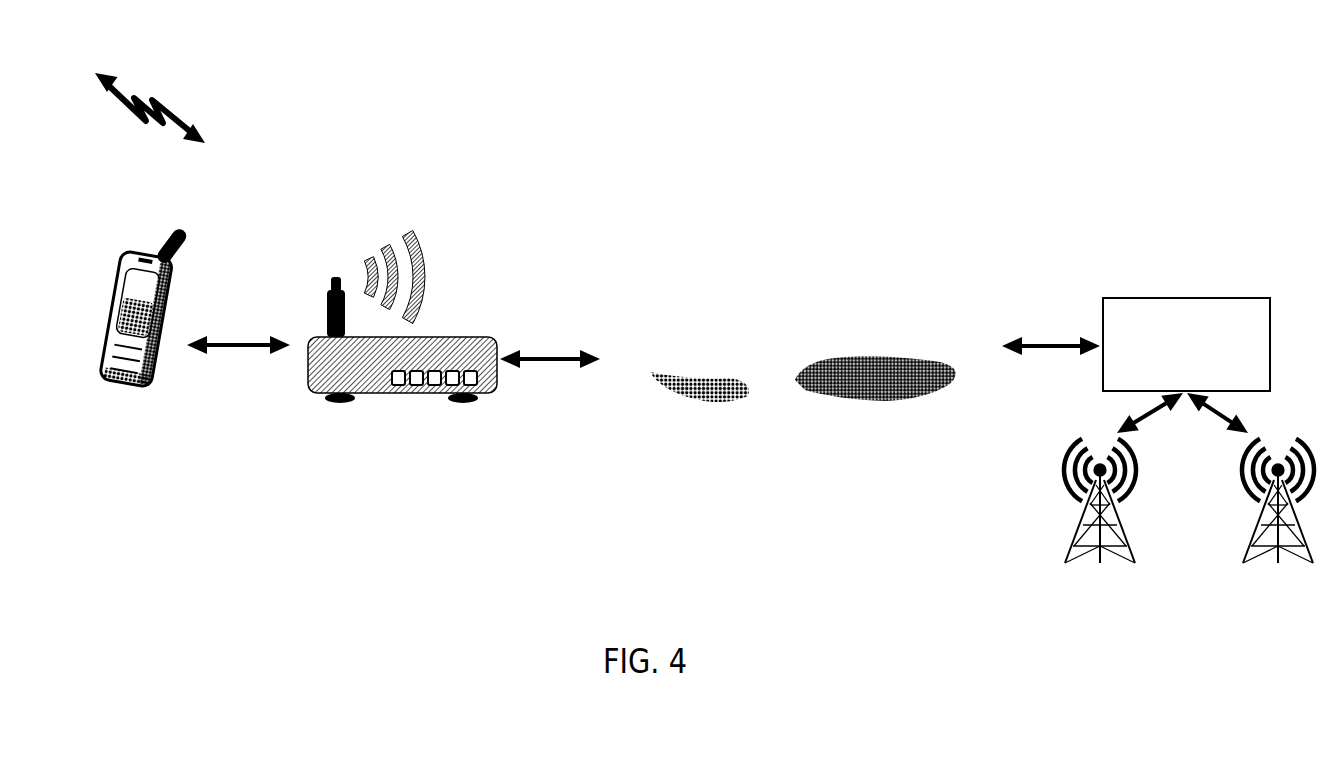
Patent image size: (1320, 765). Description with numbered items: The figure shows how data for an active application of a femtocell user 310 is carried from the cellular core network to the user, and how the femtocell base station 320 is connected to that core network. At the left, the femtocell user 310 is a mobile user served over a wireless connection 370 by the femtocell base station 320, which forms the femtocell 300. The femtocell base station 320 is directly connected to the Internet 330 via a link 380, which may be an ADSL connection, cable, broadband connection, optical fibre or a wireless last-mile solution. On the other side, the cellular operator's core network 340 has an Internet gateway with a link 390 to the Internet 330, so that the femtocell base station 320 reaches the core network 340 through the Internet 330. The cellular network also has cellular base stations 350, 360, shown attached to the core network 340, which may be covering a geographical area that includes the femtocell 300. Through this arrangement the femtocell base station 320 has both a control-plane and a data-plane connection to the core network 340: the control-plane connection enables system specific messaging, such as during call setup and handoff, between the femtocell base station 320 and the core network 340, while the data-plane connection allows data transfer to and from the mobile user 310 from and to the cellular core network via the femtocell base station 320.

The femtocell 300 is at (141, 93).
The femtocell user 310 is at (139, 331).
The femtocell base station 320 is at (402, 340).
The Internet 330 is at (803, 383).
The core network 340 is at (1186, 352).
The cellular base station 350 is at (1100, 524).
The cellular base station 360 is at (1278, 524).
The wireless link between mobile device and access point 370 is at (238, 368).
The link 380 is at (550, 345).
The link 390 is at (1051, 332).